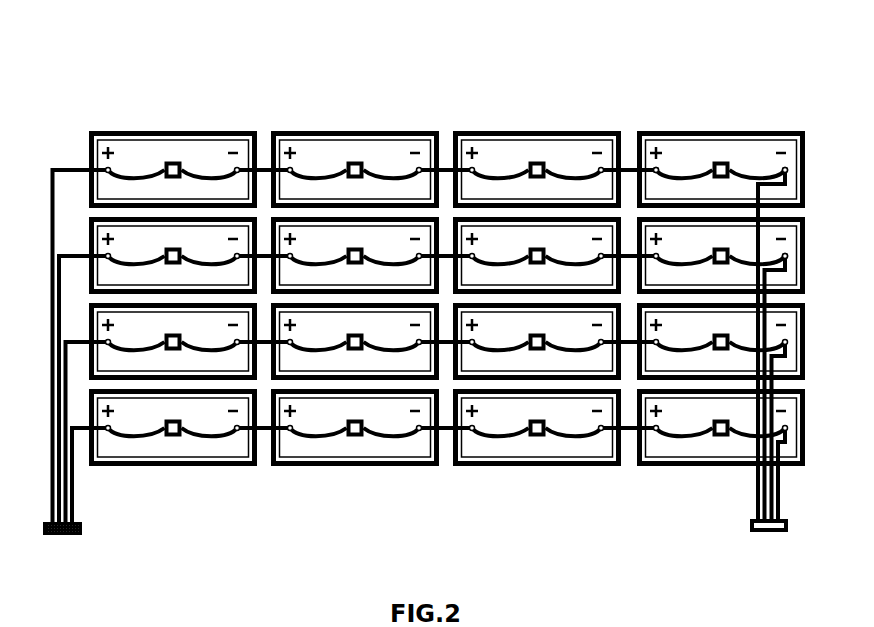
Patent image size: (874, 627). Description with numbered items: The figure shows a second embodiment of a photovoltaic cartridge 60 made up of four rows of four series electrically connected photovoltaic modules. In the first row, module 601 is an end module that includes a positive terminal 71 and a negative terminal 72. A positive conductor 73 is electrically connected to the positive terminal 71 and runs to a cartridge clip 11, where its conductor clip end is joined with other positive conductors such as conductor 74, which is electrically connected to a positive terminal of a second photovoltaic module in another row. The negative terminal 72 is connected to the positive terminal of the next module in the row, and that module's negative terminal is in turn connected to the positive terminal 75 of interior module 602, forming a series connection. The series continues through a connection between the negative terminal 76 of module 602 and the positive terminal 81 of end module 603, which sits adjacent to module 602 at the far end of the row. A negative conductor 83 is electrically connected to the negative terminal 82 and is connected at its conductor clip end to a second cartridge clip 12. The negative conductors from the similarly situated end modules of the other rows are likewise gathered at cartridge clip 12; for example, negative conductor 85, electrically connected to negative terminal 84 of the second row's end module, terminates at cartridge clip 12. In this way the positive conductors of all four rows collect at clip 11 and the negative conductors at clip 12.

The photovoltaic cartridge 60 is at (106, 54).
The photovoltaic module 601 is at (150, 150).
The photovoltaic module 602 is at (545, 155).
The photovoltaic module 603 is at (730, 155).
The positive terminal 71 is at (105, 168).
The negative terminal 72 is at (238, 165).
The positive conductor 73 is at (52, 214).
The conductor 74 is at (52, 292).
The positive terminal 75 is at (473, 167).
The negative terminal 76 is at (603, 166).
The positive terminal 81 is at (657, 167).
The negative terminal 82 is at (789, 167).
The negative conductor 83 is at (789, 183).
The negative terminal 84 is at (789, 253).
The negative conductor 85 is at (789, 268).
The cartridge clip 11 is at (43, 522).
The cartridge clip 12 is at (750, 520).